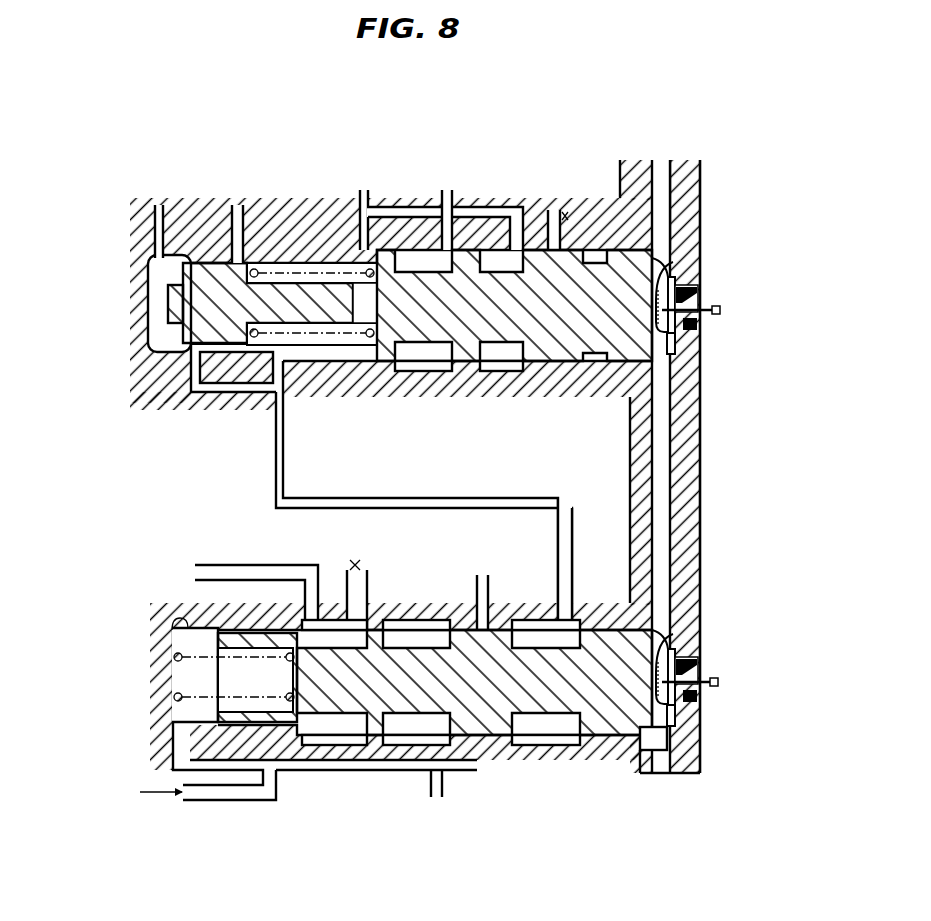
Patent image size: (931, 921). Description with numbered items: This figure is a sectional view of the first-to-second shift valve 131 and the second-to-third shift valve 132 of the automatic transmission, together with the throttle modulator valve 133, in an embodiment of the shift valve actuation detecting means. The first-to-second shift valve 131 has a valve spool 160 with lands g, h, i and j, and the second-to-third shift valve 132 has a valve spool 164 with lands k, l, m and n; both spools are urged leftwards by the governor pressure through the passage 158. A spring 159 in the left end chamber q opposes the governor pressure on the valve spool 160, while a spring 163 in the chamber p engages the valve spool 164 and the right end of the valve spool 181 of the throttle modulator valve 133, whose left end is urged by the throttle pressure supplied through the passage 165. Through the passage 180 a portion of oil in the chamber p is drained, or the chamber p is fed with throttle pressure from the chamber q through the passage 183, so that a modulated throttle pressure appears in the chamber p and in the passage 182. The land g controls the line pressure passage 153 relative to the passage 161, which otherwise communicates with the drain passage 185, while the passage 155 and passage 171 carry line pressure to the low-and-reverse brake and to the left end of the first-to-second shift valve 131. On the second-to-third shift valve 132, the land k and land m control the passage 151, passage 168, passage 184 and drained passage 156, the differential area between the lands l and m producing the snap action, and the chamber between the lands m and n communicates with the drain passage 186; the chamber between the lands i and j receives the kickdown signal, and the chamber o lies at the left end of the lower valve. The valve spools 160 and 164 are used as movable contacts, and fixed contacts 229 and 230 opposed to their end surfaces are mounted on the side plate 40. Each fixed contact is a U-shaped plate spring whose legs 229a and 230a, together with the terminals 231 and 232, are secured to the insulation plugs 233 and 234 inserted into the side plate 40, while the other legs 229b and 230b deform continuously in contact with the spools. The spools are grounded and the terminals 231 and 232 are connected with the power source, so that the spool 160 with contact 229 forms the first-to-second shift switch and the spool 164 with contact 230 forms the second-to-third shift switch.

The side plate 40 is at (700, 425).
The 1-2 shift valve 131 is at (464, 740).
The 2-3 shift valve 132 is at (474, 356).
The throttle modulator valve 133 is at (143, 366).
The passage 151 is at (354, 195).
The passage 153 is at (237, 800).
The passage 155 is at (432, 777).
The passage 156 is at (447, 195).
The passage 158 is at (668, 470).
The spring 159 is at (187, 702).
The valve spool 160 is at (670, 737).
The passage 161 is at (233, 565).
The spring 163 is at (326, 356).
The valve spool 164 is at (695, 222).
The passage 165 is at (155, 220).
The passage 168 is at (408, 390).
The passage 171 is at (340, 760).
The passage 180 is at (238, 212).
The valve spool 181 is at (178, 330).
The passage 182 is at (276, 458).
The passage 183 is at (207, 392).
The passage 184 is at (508, 207).
The drain passage 185 is at (355, 588).
The drain passage 186 is at (577, 217).
The fixed contact 229 is at (668, 726).
The leg 229a is at (690, 667).
The leg 229b is at (668, 650).
The fixed contact 230 is at (668, 352).
The leg 230a is at (705, 307).
The leg 230b is at (676, 262).
The terminal 231 is at (688, 690).
The terminal 232 is at (714, 320).
The insulation plug 233 is at (685, 647).
The insulation plug 234 is at (683, 283).
The land g is at (293, 762).
The land h is at (373, 762).
The land i is at (500, 762).
The land j is at (598, 768).
The land k is at (400, 372).
The land l is at (470, 372).
The land m is at (577, 373).
The land n is at (614, 373).
The chamber o is at (192, 677).
The chamber p is at (333, 358).
The chamber q is at (162, 270).